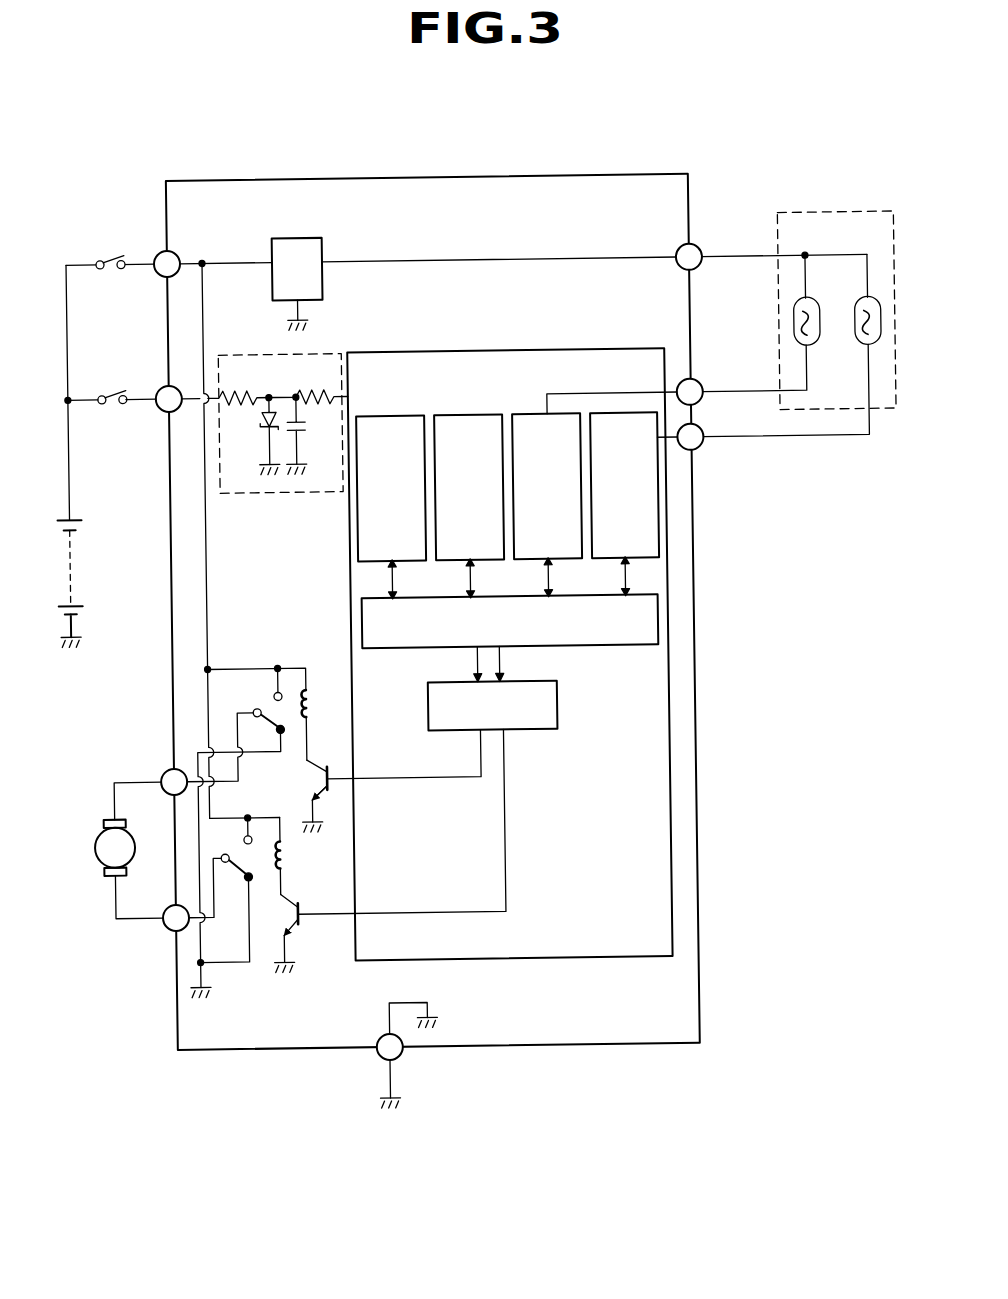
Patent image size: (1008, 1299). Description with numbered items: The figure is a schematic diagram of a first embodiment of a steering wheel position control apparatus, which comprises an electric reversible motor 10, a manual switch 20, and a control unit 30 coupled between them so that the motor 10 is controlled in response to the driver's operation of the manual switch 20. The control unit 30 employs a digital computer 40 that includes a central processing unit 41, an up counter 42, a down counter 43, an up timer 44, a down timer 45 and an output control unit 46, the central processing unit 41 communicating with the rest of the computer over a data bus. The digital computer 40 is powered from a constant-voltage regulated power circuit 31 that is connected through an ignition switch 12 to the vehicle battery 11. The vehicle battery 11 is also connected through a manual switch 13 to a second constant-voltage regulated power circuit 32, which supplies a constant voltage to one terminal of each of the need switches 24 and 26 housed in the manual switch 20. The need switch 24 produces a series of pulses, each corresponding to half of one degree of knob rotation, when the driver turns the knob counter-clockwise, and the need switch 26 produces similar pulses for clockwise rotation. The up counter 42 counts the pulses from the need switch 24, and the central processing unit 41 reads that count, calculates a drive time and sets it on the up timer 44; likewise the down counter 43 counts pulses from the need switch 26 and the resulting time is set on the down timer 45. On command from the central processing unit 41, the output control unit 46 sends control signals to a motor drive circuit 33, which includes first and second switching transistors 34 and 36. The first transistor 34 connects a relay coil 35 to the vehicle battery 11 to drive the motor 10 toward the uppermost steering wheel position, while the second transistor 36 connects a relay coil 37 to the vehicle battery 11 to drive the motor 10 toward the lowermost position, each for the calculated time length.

The electric reversible motor 10 is at (88, 856).
The vehicle battery 11 is at (78, 563).
The ignition switch 12 is at (109, 385).
The manual switch 13 is at (109, 258).
The manual switch 20 is at (798, 298).
The need switch 24 is at (793, 329).
The need switch 26 is at (856, 350).
The control unit 30 is at (481, 176).
The constant-voltage regulated power circuit 31 is at (332, 356).
The constant-voltage regulated power circuit 32 is at (301, 240).
The motor drive circuit 33 is at (247, 663).
The first switching transistor 34 is at (317, 809).
The relay coil 35 is at (309, 697).
The second switching transistor 36 is at (286, 948).
The relay coil 37 is at (283, 869).
The digital computer 40 is at (463, 355).
The central processing unit 41 is at (609, 651).
The up counter 42 is at (534, 419).
The down counter 43 is at (615, 418).
The up timer 44 is at (387, 419).
The down timer 45 is at (466, 419).
The output control unit 46 is at (537, 734).